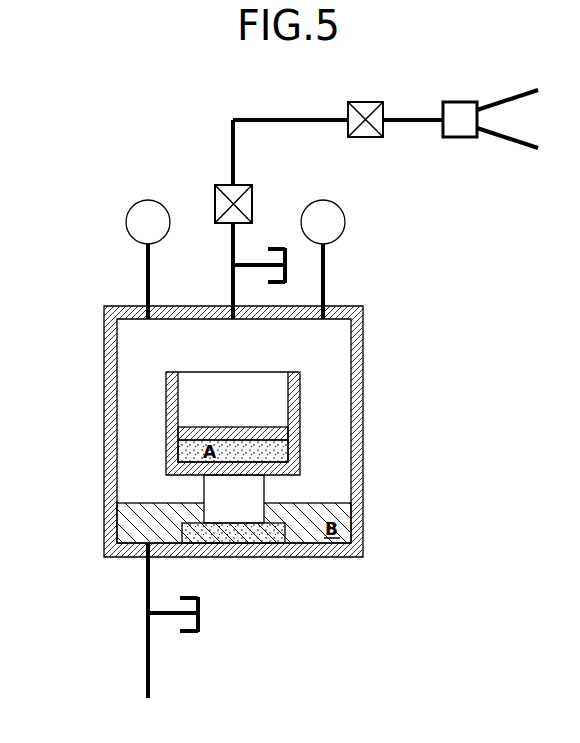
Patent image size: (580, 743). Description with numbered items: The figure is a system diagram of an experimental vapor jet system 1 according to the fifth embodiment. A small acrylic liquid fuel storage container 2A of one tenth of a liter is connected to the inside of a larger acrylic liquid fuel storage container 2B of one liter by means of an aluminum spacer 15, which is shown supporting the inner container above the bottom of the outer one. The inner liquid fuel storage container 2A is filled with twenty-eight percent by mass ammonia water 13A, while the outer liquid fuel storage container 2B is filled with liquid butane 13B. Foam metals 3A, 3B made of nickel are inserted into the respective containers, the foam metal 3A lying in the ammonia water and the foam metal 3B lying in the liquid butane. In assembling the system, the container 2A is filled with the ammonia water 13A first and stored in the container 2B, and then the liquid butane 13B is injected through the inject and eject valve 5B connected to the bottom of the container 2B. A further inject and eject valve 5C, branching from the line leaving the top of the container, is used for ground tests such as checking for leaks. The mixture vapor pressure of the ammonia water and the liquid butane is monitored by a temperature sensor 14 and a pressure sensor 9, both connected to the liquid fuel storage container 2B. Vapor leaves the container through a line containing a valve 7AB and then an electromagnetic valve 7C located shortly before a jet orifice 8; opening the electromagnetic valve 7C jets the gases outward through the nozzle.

The vapor jet system 1 is at (395, 540).
The liquid fuel storage container 2A is at (166, 387).
The liquid fuel storage container 2B is at (83, 295).
The foam metal 3A is at (277, 450).
The foam metal 3B is at (262, 543).
The inject and eject valve 5B is at (190, 633).
The inject and eject valve 5C is at (275, 246).
The valve 7AB is at (222, 183).
The electromagnetic valve 7C is at (365, 100).
The jet orifice 8 is at (458, 102).
The pressure sensor 9 is at (345, 222).
The ammonia water 13A is at (238, 427).
The liquid butane 13B is at (318, 522).
The temperature sensor 14 is at (126, 222).
The spacer 15 is at (217, 490).